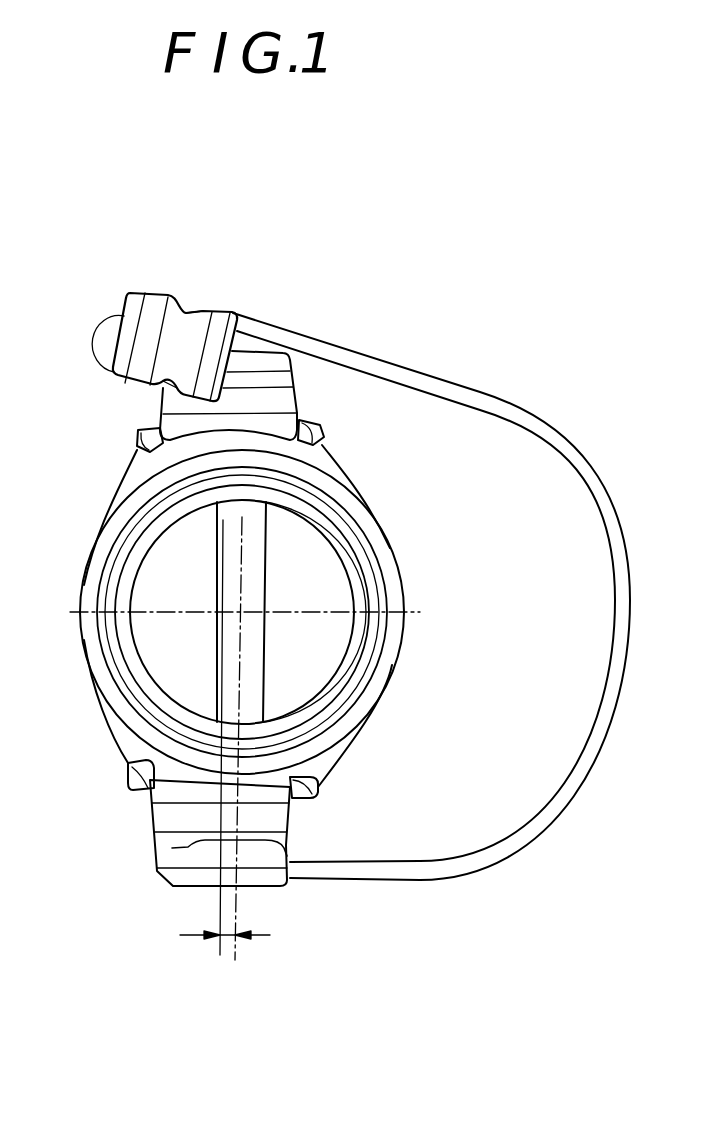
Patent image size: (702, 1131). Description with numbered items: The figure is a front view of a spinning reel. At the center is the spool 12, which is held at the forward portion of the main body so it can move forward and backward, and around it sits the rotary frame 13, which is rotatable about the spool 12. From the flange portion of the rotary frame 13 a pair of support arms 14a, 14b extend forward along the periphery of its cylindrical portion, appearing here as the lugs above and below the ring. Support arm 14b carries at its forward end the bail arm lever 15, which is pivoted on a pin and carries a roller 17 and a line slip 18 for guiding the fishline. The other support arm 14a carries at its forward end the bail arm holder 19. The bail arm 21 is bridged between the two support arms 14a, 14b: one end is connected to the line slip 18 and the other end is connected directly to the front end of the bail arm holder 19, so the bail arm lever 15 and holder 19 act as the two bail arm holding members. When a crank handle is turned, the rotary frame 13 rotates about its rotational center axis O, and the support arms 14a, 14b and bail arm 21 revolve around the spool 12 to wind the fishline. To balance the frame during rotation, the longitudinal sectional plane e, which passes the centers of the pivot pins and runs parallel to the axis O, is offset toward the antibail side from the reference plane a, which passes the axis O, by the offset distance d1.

The spool 12 is at (117, 672).
The rotary frame 13 is at (127, 483).
The support arm 14a is at (290, 820).
The support arm 14b is at (293, 403).
The bail arm lever 15 is at (167, 294).
The roller 17 is at (187, 309).
The line slip 18 is at (235, 313).
The bail arm holder 19 is at (270, 867).
The bail arm 21 is at (540, 413).
The rotational center axis O is at (242, 612).
The longitudinal sectional plane e is at (217, 903).
The reference plane a is at (233, 913).
The offset distance d1 is at (225, 945).